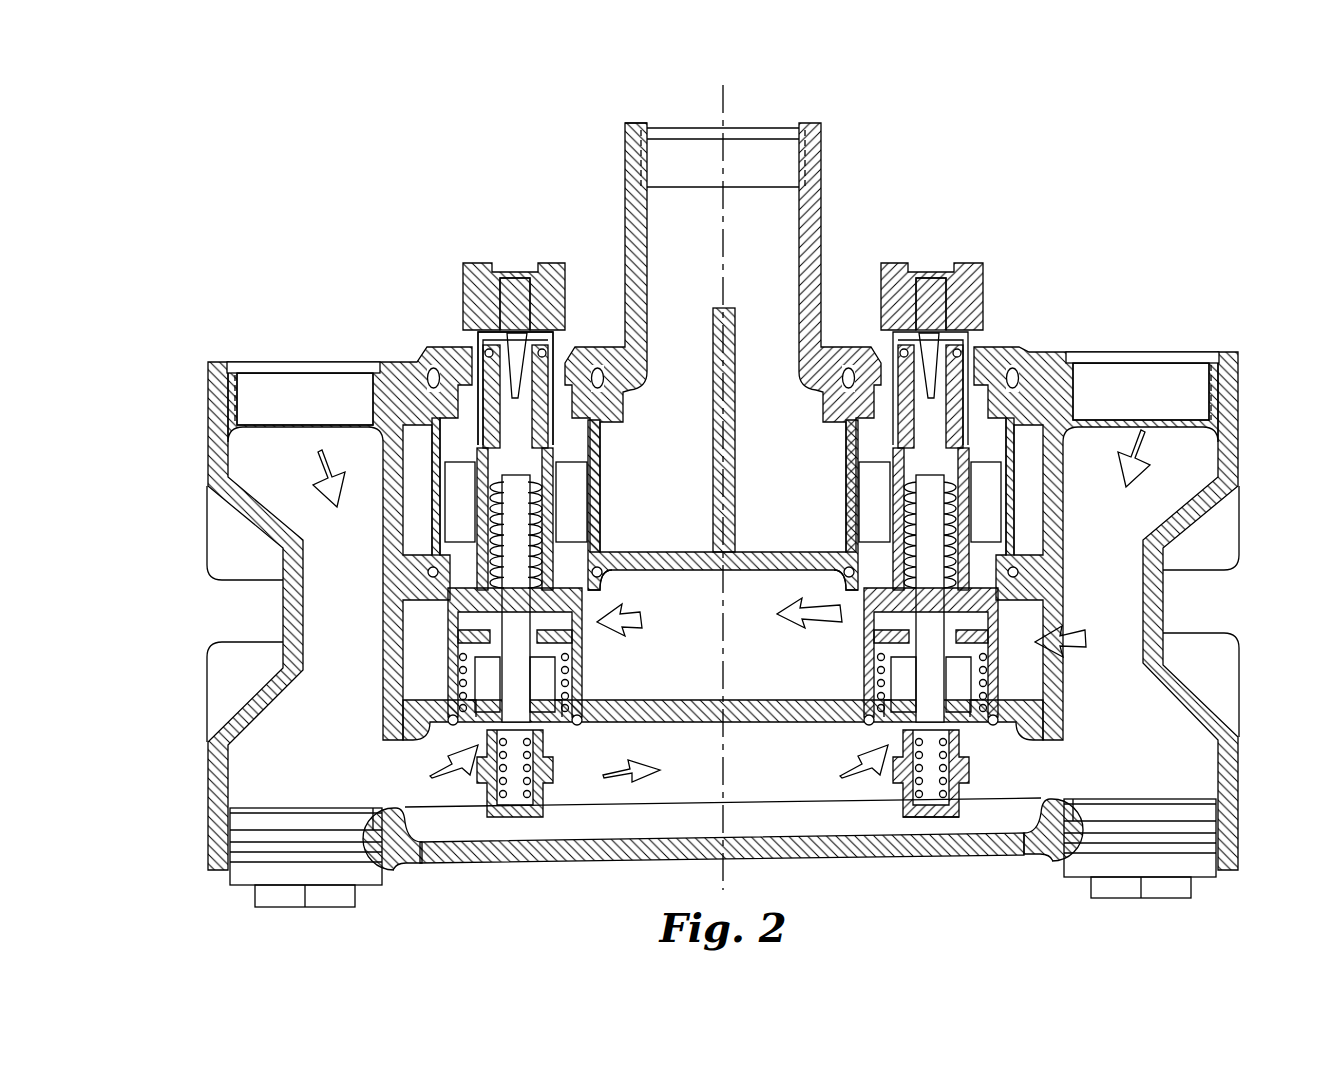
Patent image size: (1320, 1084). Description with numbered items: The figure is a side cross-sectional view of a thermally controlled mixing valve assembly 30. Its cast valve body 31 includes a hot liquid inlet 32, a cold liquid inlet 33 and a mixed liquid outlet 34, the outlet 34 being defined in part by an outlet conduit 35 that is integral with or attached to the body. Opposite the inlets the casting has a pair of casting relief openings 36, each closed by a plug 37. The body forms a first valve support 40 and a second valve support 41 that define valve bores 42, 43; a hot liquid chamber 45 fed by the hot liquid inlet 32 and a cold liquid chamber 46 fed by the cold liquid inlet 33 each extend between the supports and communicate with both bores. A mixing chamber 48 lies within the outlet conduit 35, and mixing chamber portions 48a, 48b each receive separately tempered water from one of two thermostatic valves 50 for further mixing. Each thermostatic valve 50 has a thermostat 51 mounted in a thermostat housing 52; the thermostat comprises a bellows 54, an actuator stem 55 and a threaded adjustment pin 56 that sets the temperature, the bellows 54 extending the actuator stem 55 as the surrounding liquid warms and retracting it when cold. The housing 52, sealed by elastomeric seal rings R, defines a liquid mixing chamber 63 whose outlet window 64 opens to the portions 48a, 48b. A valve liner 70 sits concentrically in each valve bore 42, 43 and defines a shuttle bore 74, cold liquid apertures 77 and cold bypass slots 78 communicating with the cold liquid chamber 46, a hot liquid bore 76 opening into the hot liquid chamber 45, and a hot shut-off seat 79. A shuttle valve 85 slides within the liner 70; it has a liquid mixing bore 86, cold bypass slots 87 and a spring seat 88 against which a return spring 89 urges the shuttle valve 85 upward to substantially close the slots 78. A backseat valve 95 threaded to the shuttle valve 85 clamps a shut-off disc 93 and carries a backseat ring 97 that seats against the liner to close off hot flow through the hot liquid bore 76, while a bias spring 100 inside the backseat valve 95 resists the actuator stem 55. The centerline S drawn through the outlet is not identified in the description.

The valve assembly 30 is at (885, 193).
The valve body 31 is at (1047, 368).
The hot liquid inlet 32 is at (250, 400).
The cold liquid inlet 33 is at (1196, 398).
The mixed liquid outlet 34 is at (667, 165).
The outlet conduit 35 is at (815, 150).
The casting relief openings 36 is at (395, 870).
The plug 37 is at (300, 900).
The first valve support 40 is at (383, 555).
The second valve support 41 is at (1061, 530).
The valve bore 42 is at (436, 545).
The valve bore 43 is at (845, 555).
The hot liquid chamber 45 is at (323, 702).
The cold liquid chamber 46 is at (1099, 607).
The mixing chamber 48 is at (751, 255).
The mixing chamber portion 48a is at (634, 490).
The mixing chamber portion 48b is at (769, 469).
The thermostatic valve 50 is at (432, 322).
The thermostat 51 is at (573, 380).
The thermostat housing 52 is at (605, 347).
The bellows 54 is at (492, 485).
The actuator stem 55 is at (520, 515).
The adjustment pin 56 is at (510, 300).
The liquid mixing chamber 63 is at (861, 449).
The outlet window 64 is at (868, 465).
The valve liner 70 is at (592, 661).
The shuttle bore 74 is at (462, 627).
The hot liquid bore 76 is at (477, 748).
The cold liquid apertures 77 is at (583, 678).
The cold bypass slots 78 is at (600, 605).
The hot shut-off seat 79 is at (455, 695).
The shuttle valve 85 is at (866, 602).
The liquid mixing bore 86 is at (931, 621).
The cold bypass slots 87 is at (882, 633).
The spring seat 88 is at (990, 648).
The return spring 89 is at (865, 677).
The shut-off disc 93 is at (993, 690).
The backseat valve 95 is at (970, 770).
The backseat ring 97 is at (900, 767).
The bias spring 100 is at (957, 812).
The seal ring R is at (430, 370).
The center axis S is at (728, 875).